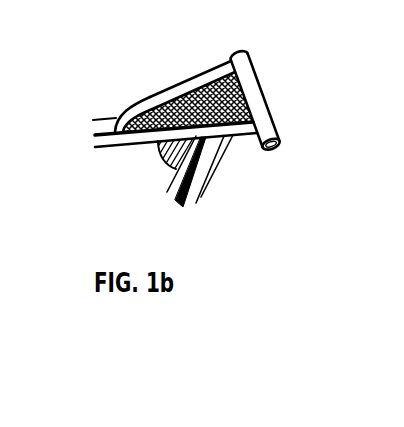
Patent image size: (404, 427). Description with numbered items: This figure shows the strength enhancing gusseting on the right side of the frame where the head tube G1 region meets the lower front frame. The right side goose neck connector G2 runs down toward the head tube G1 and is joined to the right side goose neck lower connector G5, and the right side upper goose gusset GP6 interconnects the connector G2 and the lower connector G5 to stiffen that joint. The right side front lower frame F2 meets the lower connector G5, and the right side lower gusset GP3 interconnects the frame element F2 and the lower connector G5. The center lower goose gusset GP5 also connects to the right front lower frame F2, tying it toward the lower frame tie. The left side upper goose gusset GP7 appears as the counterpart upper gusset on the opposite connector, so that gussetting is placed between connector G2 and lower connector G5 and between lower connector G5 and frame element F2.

The head tube G1 is at (264, 98).
The left side upper goose gusset GP7 is at (199, 73).
The right side upper goose gusset GP6 is at (183, 99).
The right side goose neck connector G2 is at (121, 112).
The right side goose neck lower connector G5 is at (130, 146).
The right side lower gusset GP3 is at (173, 166).
The center lower goose gusset GP5 is at (202, 189).
The right side front lower frame F2 is at (179, 204).